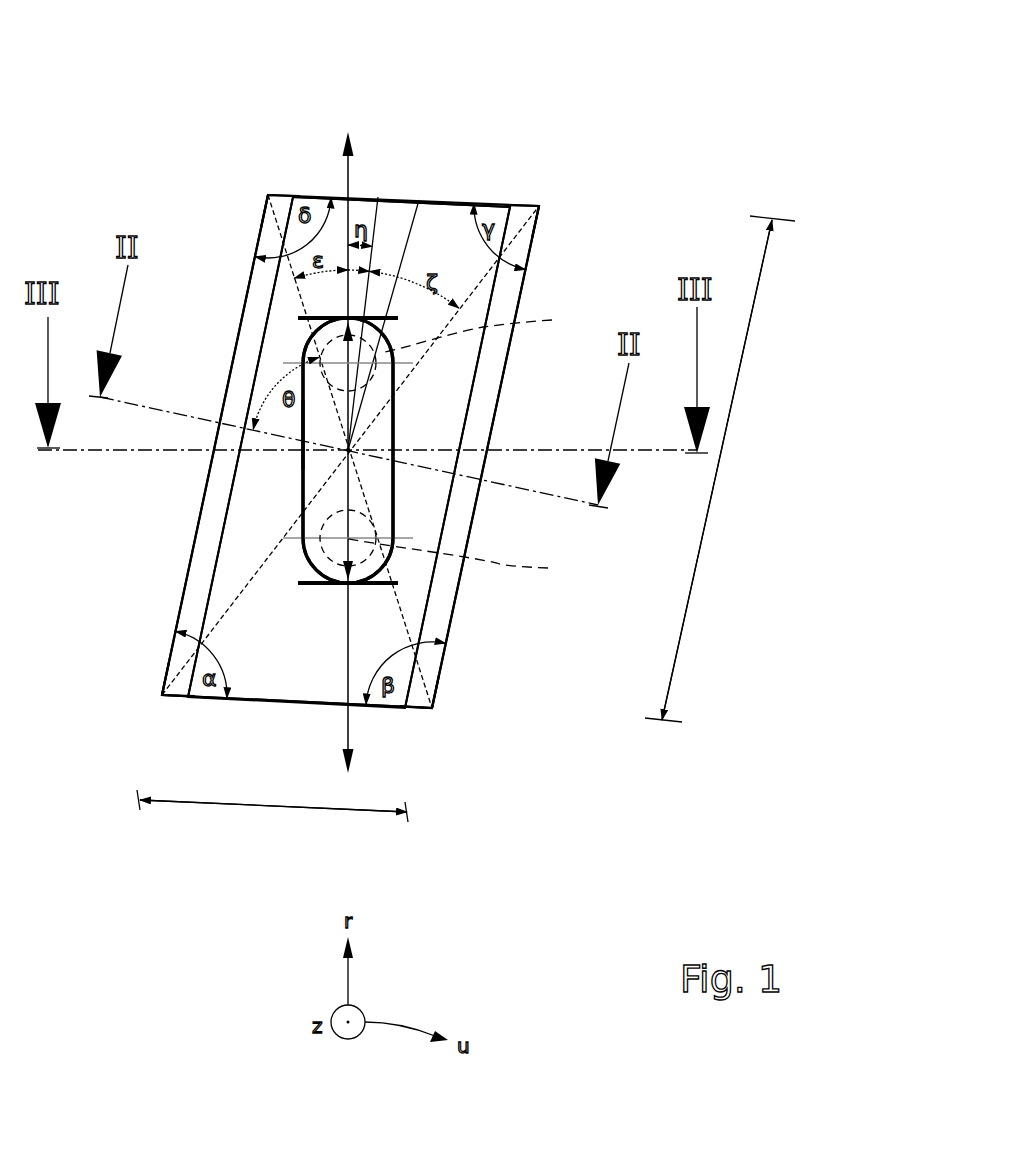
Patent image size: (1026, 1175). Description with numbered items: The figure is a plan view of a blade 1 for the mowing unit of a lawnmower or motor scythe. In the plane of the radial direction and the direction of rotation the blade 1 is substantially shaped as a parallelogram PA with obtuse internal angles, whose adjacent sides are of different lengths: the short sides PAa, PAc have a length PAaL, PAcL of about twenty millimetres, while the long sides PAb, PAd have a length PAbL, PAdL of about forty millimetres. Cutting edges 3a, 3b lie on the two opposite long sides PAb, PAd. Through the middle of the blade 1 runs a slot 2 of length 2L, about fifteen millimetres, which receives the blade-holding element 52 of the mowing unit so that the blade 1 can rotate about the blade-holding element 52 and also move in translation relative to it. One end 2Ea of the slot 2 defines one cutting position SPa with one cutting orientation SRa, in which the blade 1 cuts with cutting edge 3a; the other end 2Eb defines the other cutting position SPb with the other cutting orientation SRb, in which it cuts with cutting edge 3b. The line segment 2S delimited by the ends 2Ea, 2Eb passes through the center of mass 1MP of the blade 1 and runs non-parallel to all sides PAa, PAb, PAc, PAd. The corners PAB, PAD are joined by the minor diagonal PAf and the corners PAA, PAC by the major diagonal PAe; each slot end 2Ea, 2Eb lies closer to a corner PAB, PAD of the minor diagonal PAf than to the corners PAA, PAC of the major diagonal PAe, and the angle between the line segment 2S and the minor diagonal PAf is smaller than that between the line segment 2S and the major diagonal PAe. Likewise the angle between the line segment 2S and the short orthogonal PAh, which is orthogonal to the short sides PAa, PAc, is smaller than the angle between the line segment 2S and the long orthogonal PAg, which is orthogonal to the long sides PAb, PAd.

The blade 1 is at (136, 92).
The parallelogram PA is at (122, 193).
The corner of the major diagonal PAA is at (162, 695).
The corner of the minor diagonal PAB is at (432, 708).
The corner of the major diagonal PAC is at (539, 206).
The corner of the minor diagonal PAD is at (268, 195).
The short side PAa is at (202, 698).
The long side PAb is at (442, 663).
The short side PAc is at (313, 196).
The long side PAd is at (233, 357).
The major diagonal PAe is at (394, 366).
The minor diagonal PAf is at (298, 312).
The long orthogonal PAg is at (303, 433).
The short orthogonal PAh is at (378, 212).
The center of mass 1MP is at (346, 451).
The cutting orientation SRa is at (350, 170).
The cutting orientation SRb is at (352, 732).
The cutting position SPa is at (348, 552).
The cutting position SPb is at (380, 316).
The slot 2 is at (303, 470).
The line segment 2S is at (303, 507).
The length of the slot 2L is at (233, 487).
The end of the slot 2Ea is at (348, 318).
The end of the slot 2Eb is at (348, 583).
The cutting edge 3a is at (455, 520).
The cutting edge 3b is at (215, 492).
The blade-holding element 52 is at (465, 444).
The length of short side PAaL is at (282, 806).
The length of short side PAcL is at (273, 849).
The length of long side PAbL is at (717, 483).
The length of long side PAdL is at (792, 470).